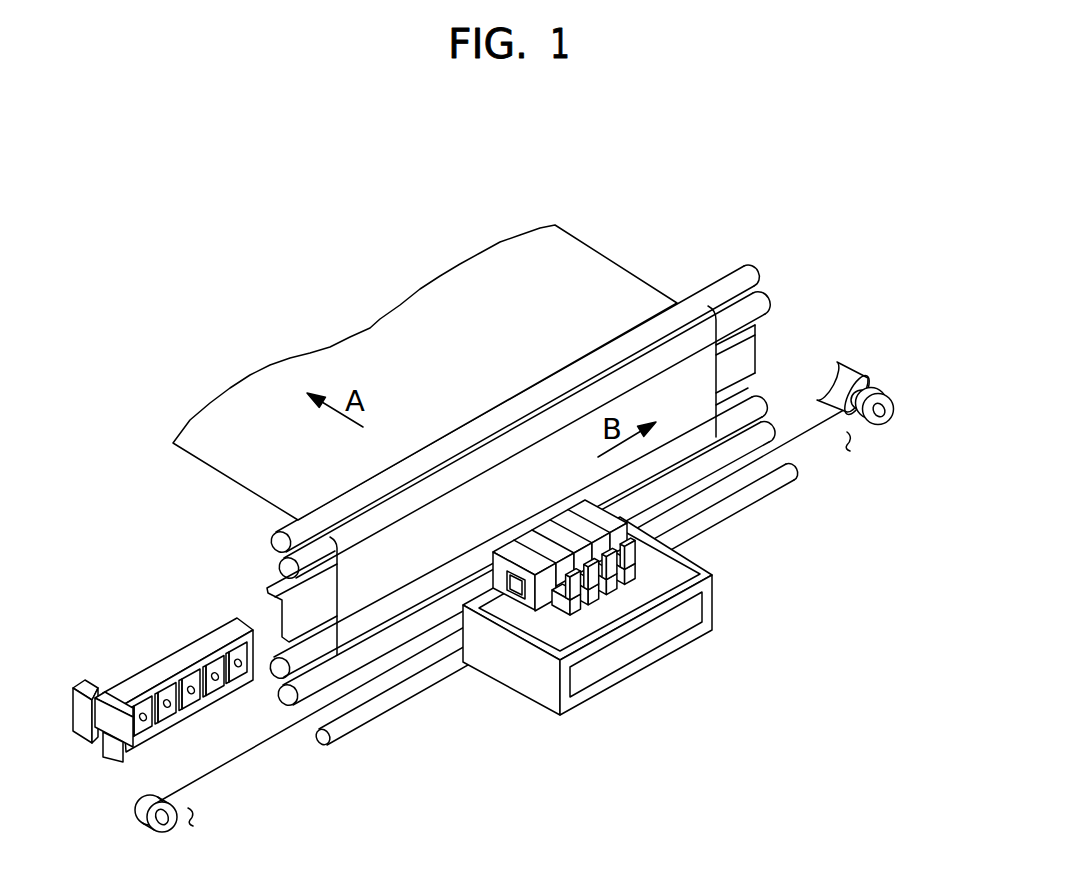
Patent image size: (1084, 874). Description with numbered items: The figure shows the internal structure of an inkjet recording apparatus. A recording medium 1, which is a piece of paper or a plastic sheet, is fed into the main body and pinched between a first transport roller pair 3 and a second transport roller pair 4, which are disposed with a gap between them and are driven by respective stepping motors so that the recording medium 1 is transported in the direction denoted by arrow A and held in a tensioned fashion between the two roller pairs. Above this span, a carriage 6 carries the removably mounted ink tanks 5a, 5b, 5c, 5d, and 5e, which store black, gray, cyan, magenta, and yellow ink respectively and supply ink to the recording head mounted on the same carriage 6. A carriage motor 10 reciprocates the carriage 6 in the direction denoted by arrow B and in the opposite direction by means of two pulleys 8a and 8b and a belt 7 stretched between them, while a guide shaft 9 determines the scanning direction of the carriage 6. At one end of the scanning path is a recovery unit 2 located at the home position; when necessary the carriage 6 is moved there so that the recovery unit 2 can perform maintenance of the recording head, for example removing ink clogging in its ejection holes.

The recording medium 1 is at (588, 262).
The recovery unit 2 is at (203, 649).
The first transport roller pair 3 is at (762, 431).
The second transport roller pair 4 is at (758, 308).
The ink tank 5a is at (506, 551).
The ink tank 5b is at (528, 548).
The ink tank 5c is at (548, 531).
The ink tank 5d is at (566, 519).
The ink tank 5e is at (588, 508).
The carriage 6 is at (710, 609).
The belt 7 is at (245, 757).
The pulley 8a is at (891, 404).
The pulley 8b is at (140, 808).
The guide shaft 9 is at (378, 704).
The carriage motor 10 is at (845, 369).